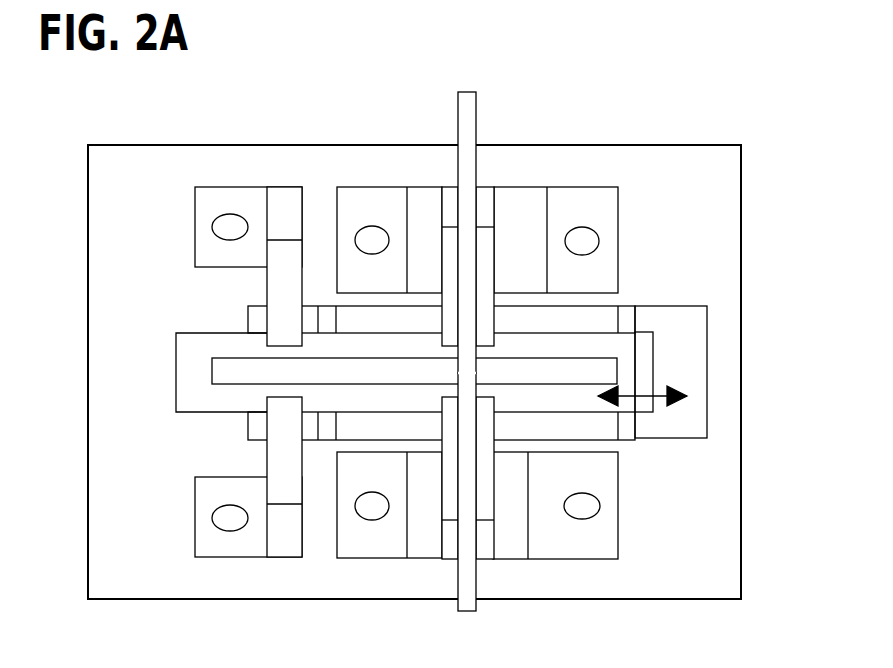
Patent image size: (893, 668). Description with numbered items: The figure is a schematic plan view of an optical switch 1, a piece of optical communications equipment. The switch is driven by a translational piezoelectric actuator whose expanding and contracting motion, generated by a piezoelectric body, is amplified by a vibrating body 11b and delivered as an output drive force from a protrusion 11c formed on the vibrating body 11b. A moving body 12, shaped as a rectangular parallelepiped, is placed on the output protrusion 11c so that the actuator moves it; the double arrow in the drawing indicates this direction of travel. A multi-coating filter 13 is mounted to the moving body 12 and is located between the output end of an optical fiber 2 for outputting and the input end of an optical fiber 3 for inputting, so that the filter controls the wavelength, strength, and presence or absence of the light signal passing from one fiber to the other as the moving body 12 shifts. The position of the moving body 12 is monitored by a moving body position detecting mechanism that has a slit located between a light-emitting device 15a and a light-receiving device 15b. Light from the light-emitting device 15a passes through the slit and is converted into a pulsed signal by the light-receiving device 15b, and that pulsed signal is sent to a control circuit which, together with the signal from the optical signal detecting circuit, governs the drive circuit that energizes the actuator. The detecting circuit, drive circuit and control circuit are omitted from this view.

The optical switch 1 is at (165, 107).
The optical fiber for outputting 2 is at (505, 225).
The optical fiber for inputting 3 is at (486, 519).
The vibrating body 11b is at (724, 363).
The protrusion 11c is at (630, 433).
The moving body 12 is at (717, 372).
The multi-coating filter 13 is at (503, 267).
The light-emitting device 15a is at (265, 215).
The light-receiving device 15b is at (256, 525).